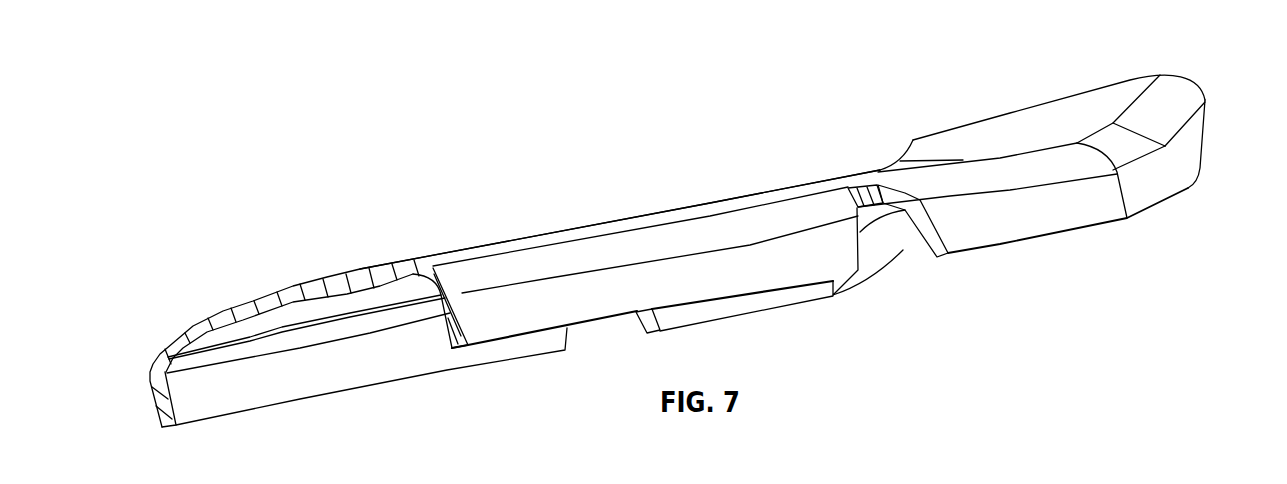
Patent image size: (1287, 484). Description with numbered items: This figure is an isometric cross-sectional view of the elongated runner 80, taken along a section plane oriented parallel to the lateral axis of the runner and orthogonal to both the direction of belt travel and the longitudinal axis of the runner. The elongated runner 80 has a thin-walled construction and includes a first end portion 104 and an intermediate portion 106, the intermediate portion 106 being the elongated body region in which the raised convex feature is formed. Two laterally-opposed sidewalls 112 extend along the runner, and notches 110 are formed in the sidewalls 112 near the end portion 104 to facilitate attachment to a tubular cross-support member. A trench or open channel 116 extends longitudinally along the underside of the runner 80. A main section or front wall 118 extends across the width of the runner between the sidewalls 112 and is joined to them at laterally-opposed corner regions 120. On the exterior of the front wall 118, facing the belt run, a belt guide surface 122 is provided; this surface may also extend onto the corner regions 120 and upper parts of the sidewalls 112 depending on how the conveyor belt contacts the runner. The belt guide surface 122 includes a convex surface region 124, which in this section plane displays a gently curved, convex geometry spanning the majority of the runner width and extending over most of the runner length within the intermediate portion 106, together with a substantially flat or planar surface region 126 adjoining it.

The elongated runner 80 is at (418, 114).
The first end portion 104 is at (942, 142).
The intermediate portion 106 is at (603, 226).
The notches 110 is at (632, 328).
The sidewalls 112 is at (248, 402).
The open channel 116 is at (350, 376).
The front wall 118 is at (252, 296).
The corner regions 120 is at (156, 361).
The belt guide surface 122 is at (714, 198).
The convex surface region 124 is at (410, 254).
The planar surface region 126 is at (1002, 145).